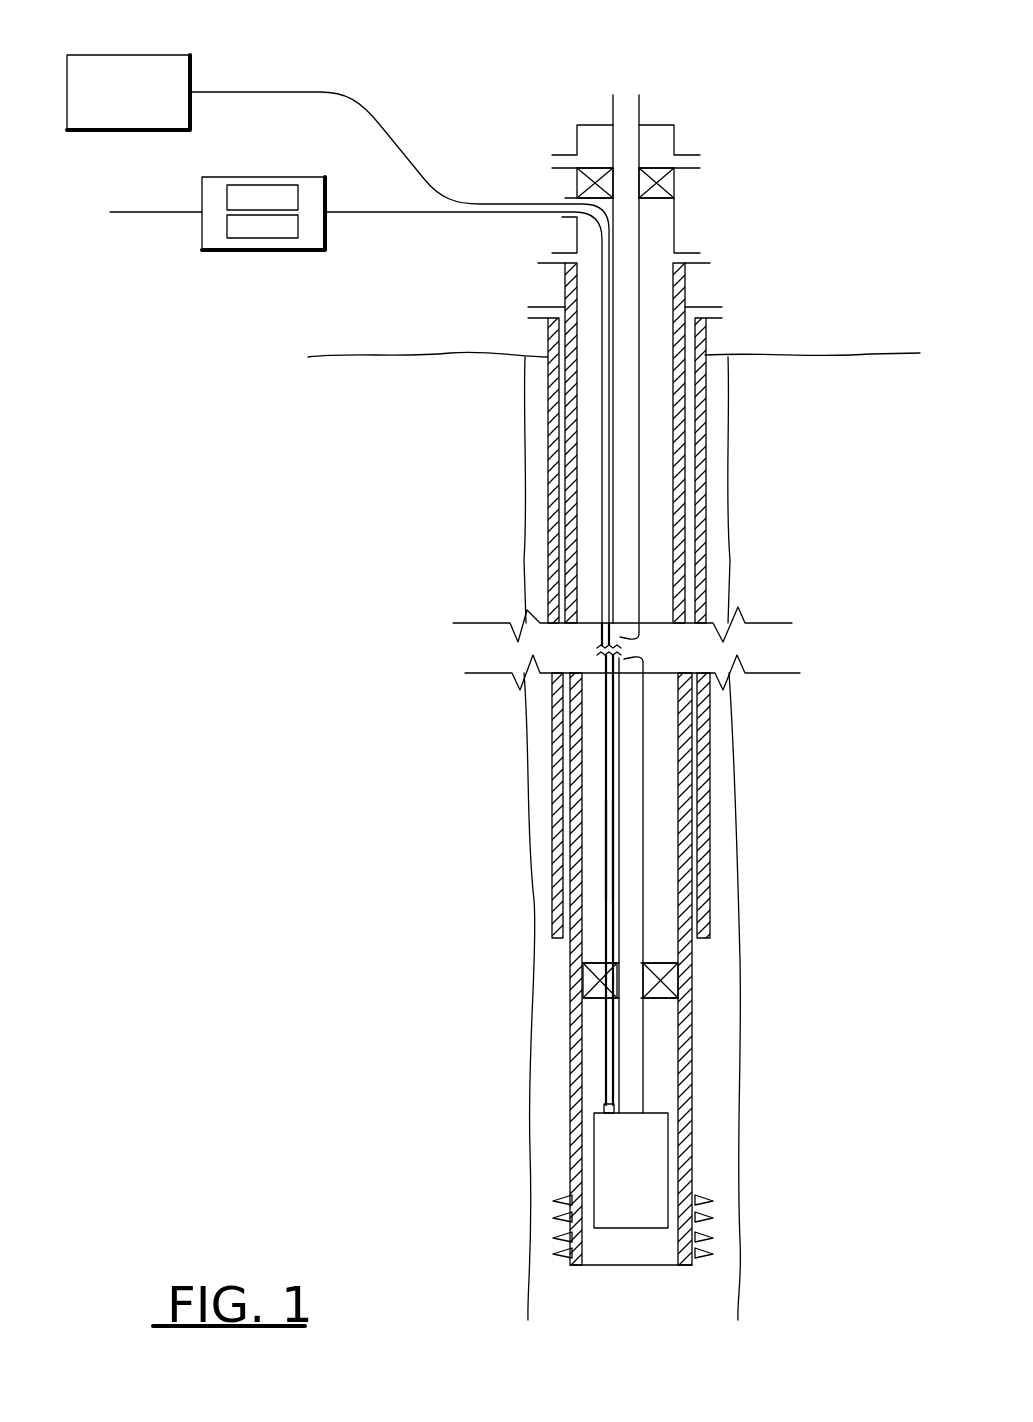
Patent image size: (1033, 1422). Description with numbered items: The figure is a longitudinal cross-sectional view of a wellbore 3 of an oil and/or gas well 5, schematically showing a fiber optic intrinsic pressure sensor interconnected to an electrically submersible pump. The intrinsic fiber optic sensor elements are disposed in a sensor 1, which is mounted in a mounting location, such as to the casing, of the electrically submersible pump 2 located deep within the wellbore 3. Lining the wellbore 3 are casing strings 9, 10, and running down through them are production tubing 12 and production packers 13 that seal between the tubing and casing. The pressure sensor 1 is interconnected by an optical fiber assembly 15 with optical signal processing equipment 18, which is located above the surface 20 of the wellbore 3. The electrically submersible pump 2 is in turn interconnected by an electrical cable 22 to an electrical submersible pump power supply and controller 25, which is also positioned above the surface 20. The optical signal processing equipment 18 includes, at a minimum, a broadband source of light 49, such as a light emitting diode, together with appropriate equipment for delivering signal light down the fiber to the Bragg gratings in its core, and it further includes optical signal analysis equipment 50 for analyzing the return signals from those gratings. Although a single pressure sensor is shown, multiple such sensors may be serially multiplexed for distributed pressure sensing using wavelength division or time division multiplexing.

The sensor 1 is at (605, 1103).
The electrically submersible pump 2 is at (645, 1188).
The wellbore 3 is at (724, 522).
The oil and/or gas well 5 is at (440, 745).
The casing string 9 is at (559, 455).
The casing string 10 is at (565, 527).
The production tubing 12 is at (627, 487).
The production packer 13 is at (583, 978).
The optical fiber assembly 15 is at (605, 857).
The optical signal processing equipment 18 is at (203, 230).
The surface 20 is at (373, 355).
The electrical cable 22 is at (611, 791).
The electrical submersible pump power supply and controller 25 is at (128, 55).
The broadband source of light 49 is at (250, 193).
The optical signal analysis equipment 50 is at (238, 230).